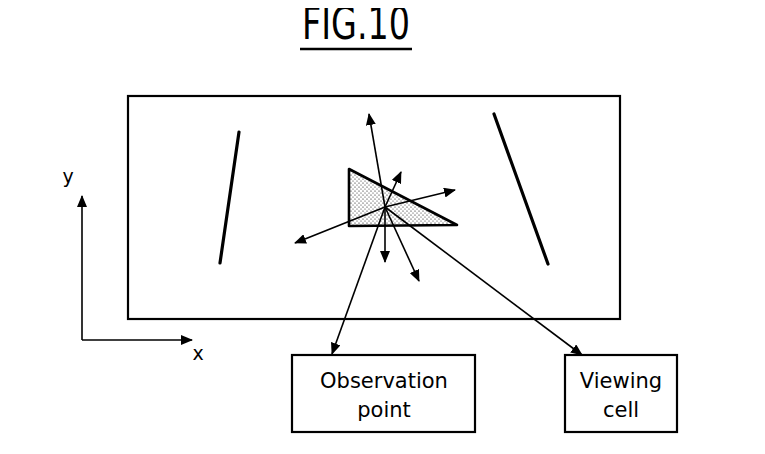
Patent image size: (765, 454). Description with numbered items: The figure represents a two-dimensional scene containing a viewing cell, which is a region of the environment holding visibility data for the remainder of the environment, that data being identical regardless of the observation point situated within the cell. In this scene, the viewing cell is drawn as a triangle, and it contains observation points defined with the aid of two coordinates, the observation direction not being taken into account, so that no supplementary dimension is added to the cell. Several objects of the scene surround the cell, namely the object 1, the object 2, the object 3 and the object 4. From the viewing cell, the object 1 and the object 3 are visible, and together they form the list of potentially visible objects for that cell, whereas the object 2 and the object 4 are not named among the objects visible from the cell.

The object 1 is at (366, 178).
The object 2 is at (203, 197).
The object 3 is at (438, 234).
The object 4 is at (539, 189).